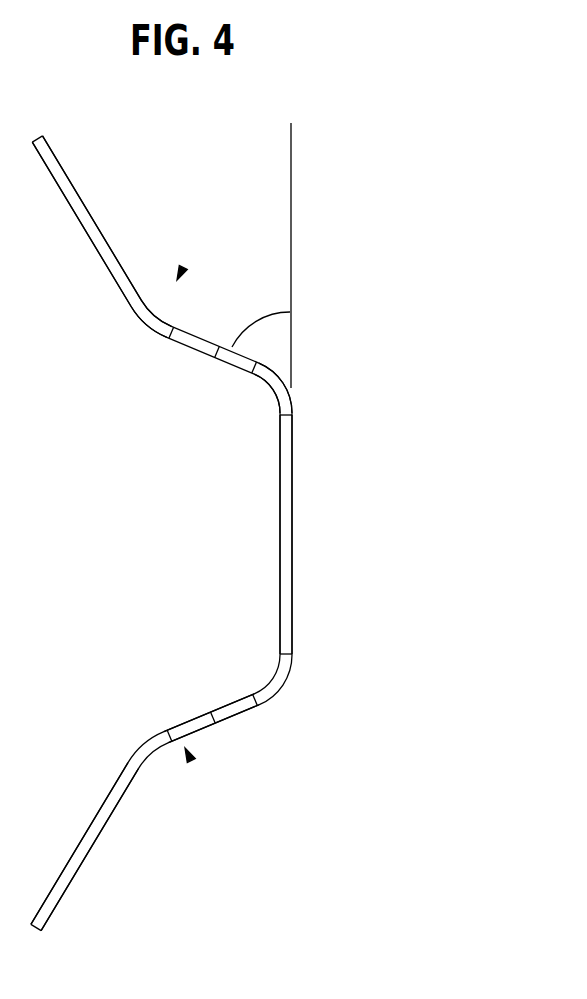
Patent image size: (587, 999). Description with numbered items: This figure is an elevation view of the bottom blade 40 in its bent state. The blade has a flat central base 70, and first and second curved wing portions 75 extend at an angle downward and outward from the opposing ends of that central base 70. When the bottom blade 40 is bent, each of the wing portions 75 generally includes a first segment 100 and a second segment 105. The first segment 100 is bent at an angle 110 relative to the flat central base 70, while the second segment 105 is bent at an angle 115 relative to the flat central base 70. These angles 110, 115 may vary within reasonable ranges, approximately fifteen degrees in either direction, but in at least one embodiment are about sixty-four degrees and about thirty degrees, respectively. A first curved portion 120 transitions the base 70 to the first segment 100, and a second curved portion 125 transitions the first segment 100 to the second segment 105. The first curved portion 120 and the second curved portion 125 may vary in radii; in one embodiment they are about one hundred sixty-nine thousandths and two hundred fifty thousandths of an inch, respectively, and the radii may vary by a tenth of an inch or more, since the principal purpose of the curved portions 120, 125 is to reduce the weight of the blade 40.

The bottom blade 40 is at (426, 634).
The central base 70 is at (295, 462).
The curved wing portions 75 is at (181, 269).
The first segment 100 is at (245, 715).
The second segment 105 is at (62, 162).
The angle 110 is at (261, 316).
The angle 115 is at (111, 237).
The first curved portion 120 is at (283, 378).
The second curved portion 125 is at (146, 327).